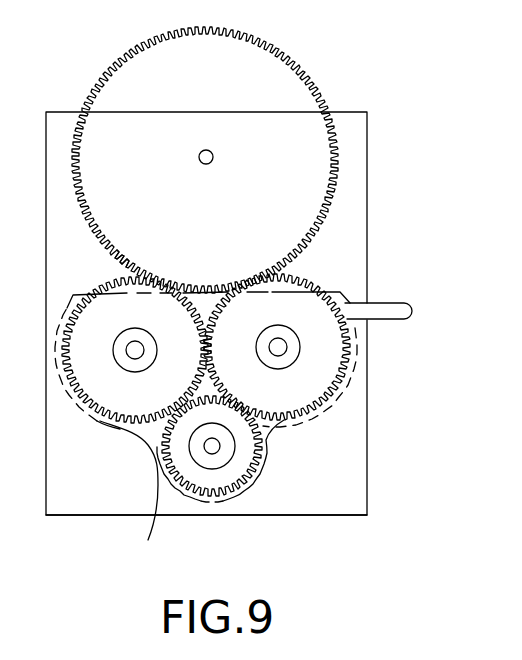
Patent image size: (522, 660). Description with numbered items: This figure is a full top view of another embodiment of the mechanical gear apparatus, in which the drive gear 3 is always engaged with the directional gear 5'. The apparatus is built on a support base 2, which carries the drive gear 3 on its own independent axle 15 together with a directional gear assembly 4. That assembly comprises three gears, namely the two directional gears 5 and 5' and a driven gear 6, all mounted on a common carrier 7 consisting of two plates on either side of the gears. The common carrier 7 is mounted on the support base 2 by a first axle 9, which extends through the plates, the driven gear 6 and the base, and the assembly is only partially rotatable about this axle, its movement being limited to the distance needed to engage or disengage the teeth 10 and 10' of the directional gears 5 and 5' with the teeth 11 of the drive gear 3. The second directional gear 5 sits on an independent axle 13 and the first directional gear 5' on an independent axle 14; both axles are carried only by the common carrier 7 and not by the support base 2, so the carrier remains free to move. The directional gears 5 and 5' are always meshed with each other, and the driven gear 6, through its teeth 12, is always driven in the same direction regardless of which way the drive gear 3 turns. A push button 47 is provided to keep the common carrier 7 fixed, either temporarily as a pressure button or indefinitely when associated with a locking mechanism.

The support base 2 is at (58, 120).
The drive gear 3 is at (290, 87).
The directional gear assembly 4 is at (111, 462).
The directional gear 5 is at (70, 361).
The directional gear 5' is at (335, 366).
The driven gear 6 is at (221, 480).
The common carrier 7 is at (284, 420).
The first axle 9 is at (212, 448).
The teeth 10 is at (132, 327).
The teeth 10' is at (226, 359).
The teeth 11 is at (122, 258).
The teeth 12 is at (129, 495).
The independent axle 13 is at (135, 350).
The independent axle 14 is at (278, 347).
The independent axle 15 is at (213, 159).
The push button 47 is at (381, 303).